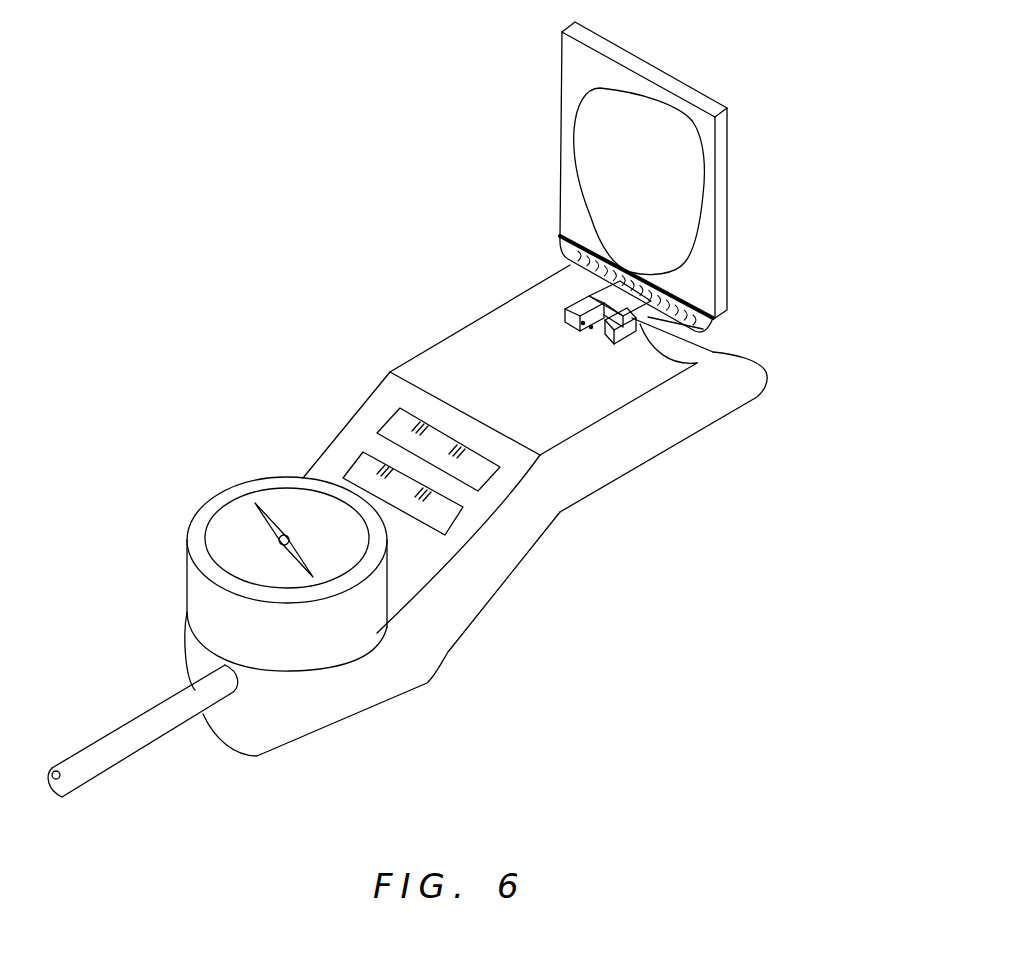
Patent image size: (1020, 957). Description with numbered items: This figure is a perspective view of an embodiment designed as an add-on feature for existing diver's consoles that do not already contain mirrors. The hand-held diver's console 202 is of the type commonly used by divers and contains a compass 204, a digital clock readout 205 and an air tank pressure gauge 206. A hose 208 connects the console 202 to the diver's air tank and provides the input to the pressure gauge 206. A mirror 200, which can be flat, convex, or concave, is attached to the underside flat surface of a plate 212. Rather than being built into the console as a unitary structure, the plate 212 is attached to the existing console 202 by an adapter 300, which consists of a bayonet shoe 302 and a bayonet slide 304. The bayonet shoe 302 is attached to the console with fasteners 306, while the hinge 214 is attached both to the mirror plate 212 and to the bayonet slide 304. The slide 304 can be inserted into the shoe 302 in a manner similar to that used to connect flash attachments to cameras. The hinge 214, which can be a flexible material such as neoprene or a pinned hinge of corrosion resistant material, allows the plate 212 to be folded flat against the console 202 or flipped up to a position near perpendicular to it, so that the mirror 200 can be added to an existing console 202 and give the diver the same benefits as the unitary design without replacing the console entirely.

The mirror 200 is at (570, 167).
The diver's console 202 is at (538, 556).
The compass 204 is at (222, 512).
The digital clock readout 205 is at (352, 462).
The air tank pressure gauge 206 is at (387, 422).
The hose 208 is at (120, 727).
The plate 212 is at (730, 185).
The hinge 214 is at (560, 247).
The adapter 300 is at (575, 292).
The bayonet shoe 302 is at (575, 290).
The bayonet slide 304 is at (720, 363).
The fasteners 306 is at (577, 322).